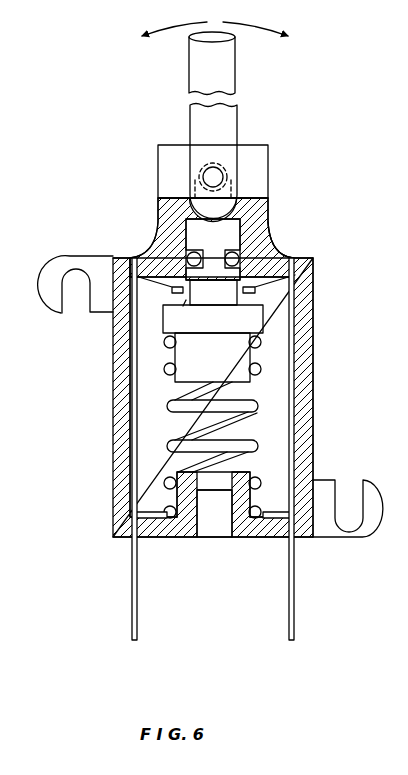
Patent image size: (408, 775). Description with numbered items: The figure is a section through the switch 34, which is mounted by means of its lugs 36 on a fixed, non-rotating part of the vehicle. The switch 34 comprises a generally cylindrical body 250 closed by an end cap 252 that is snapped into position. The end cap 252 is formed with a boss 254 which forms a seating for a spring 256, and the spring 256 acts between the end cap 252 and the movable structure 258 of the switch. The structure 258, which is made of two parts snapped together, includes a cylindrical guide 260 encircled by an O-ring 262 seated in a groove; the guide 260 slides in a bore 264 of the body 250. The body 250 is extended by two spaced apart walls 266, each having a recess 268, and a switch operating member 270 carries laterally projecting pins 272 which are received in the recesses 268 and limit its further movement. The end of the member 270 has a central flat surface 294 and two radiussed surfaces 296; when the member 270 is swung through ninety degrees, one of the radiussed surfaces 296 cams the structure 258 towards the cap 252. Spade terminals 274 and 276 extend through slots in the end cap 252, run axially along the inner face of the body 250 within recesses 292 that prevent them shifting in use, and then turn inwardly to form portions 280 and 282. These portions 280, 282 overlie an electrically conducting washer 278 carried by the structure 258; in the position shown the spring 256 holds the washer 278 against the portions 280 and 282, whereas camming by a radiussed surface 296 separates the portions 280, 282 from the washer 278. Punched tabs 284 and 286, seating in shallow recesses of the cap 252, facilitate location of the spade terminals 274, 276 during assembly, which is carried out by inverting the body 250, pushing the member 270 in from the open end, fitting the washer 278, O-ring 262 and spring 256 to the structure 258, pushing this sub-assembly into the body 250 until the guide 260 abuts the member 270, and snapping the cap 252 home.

The switch 34 is at (80, 232).
The lugs 36 is at (64, 262).
The body 250 is at (113, 430).
The end cap 252 is at (154, 537).
The boss 254 is at (228, 537).
The spring 256 is at (167, 448).
The movable structure 258 is at (165, 333).
The cylindrical guide 260 is at (186, 230).
The O-ring 262 is at (188, 256).
The bore 264 is at (247, 227).
The walls 266 is at (268, 145).
The recess 268 is at (204, 165).
The switch operating member 270 is at (237, 84).
The pins 272 is at (215, 180).
The spade terminal 274 is at (132, 627).
The spade terminal 276 is at (295, 627).
The electrically conducting washer 278 is at (213, 319).
The portion 280 is at (183, 306).
The portion 282 is at (285, 288).
The punched tab 284 is at (147, 512).
The punched tab 286 is at (287, 508).
The recesses 292 is at (288, 264).
The central flat surface 294 is at (213, 262).
The radiussed surfaces 296 is at (197, 215).